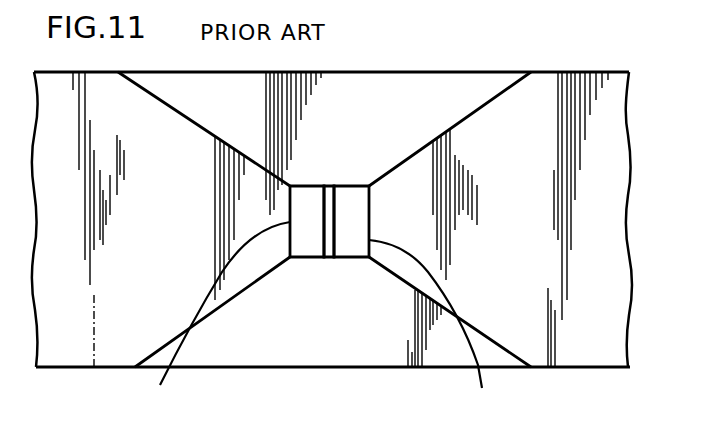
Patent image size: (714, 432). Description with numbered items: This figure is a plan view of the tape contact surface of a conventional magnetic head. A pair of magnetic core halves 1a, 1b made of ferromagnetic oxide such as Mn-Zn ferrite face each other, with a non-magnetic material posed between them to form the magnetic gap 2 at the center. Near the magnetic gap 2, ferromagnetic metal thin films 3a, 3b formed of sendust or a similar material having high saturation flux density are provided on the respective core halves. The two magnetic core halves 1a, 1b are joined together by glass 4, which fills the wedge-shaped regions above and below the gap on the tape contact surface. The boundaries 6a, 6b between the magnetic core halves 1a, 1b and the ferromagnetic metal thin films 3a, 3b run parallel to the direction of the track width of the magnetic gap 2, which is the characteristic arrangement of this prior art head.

The magnetic core half 1a is at (78, 340).
The magnetic core half 1b is at (596, 332).
The magnetic gap 2 is at (329, 252).
The ferromagnetic metal thin film 3a is at (305, 258).
The ferromagnetic metal thin film 3b is at (352, 250).
The glass 4 is at (418, 115).
The boundary 6a is at (214, 319).
The boundary 6b is at (436, 328).